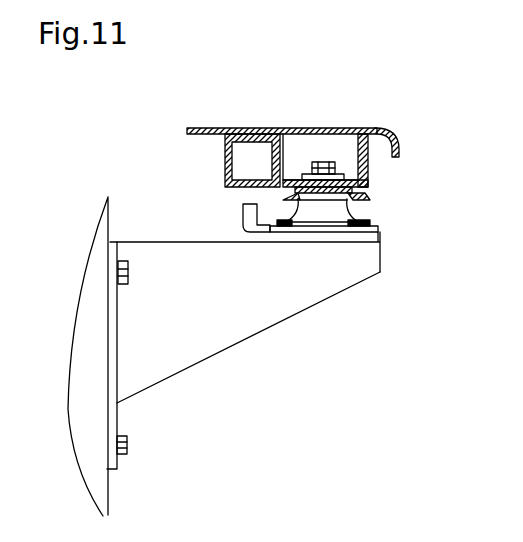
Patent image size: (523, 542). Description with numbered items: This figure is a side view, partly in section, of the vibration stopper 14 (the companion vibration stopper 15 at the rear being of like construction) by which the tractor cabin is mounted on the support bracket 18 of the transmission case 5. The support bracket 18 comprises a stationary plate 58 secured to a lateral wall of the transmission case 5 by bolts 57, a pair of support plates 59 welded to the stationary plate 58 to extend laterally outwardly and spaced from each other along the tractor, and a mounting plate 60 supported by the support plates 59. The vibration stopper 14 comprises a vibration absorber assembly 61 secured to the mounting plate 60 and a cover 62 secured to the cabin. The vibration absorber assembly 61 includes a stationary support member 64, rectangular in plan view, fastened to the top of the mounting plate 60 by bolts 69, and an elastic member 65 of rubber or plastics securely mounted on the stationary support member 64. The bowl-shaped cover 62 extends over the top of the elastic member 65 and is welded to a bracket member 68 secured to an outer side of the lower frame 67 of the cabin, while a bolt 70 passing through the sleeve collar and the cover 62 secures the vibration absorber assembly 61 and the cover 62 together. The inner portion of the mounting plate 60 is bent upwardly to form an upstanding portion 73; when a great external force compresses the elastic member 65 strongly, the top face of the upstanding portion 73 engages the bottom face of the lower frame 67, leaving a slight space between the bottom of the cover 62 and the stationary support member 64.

The transmission case 5 is at (82, 428).
The vibration stopper 14 is at (389, 210).
The vibration stopper 15 is at (207, 127).
The support bracket 18 is at (252, 410).
The bolts 57 is at (128, 276).
The stationary plate 58 is at (116, 355).
The support plates 59 is at (198, 350).
The mounting plate 60 is at (323, 239).
The vibration absorber assembly 61 is at (333, 215).
The cover 62 is at (360, 196).
The stationary support member 64 is at (292, 232).
The elastic member 65 is at (358, 208).
The lower frame 67 is at (225, 162).
The bracket member 68 is at (378, 132).
The bolts 69 is at (378, 234).
The bolt 70 is at (324, 162).
The upstanding portion 73 is at (243, 215).